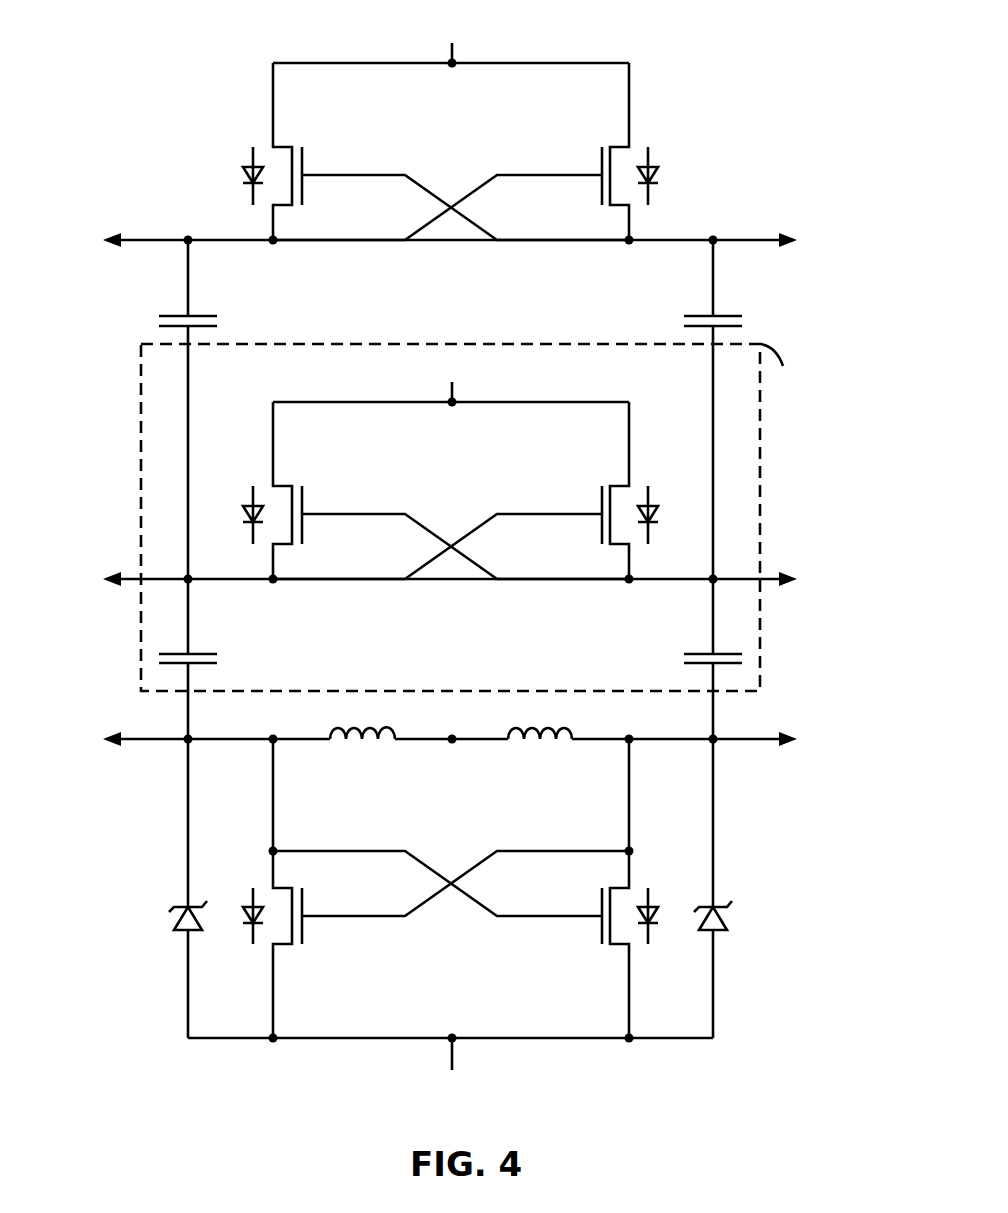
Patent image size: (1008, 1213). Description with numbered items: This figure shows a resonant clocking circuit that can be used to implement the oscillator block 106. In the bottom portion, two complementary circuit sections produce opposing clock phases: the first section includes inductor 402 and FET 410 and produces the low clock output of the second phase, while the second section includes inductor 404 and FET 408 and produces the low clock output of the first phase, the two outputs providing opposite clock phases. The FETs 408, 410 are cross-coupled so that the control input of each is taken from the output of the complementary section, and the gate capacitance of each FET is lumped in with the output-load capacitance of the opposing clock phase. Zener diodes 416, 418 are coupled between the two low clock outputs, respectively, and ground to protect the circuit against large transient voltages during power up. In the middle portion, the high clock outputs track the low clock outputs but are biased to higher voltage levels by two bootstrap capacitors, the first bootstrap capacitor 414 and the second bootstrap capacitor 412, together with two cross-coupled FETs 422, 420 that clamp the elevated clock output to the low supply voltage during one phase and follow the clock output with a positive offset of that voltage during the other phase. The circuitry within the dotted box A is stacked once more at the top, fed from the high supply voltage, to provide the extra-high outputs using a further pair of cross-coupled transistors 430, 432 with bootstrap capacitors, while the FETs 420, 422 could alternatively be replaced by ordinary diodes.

The oscillator block 106 is at (187, 128).
The inductor 402 is at (362, 720).
The inductor 404 is at (540, 720).
The FET 408 is at (480, 888).
The FET 410 is at (422, 888).
The bootstrap capacitor CB2 412 is at (209, 659).
The bootstrap capacitor CB1 414 is at (696, 659).
The Zener diode 416 is at (169, 888).
The Zener diode 418 is at (733, 888).
The cross-coupled FET 420 is at (465, 490).
The cross-coupled FET 422 is at (436, 490).
The transistor 430 is at (465, 151).
The transistor 432 is at (436, 151).